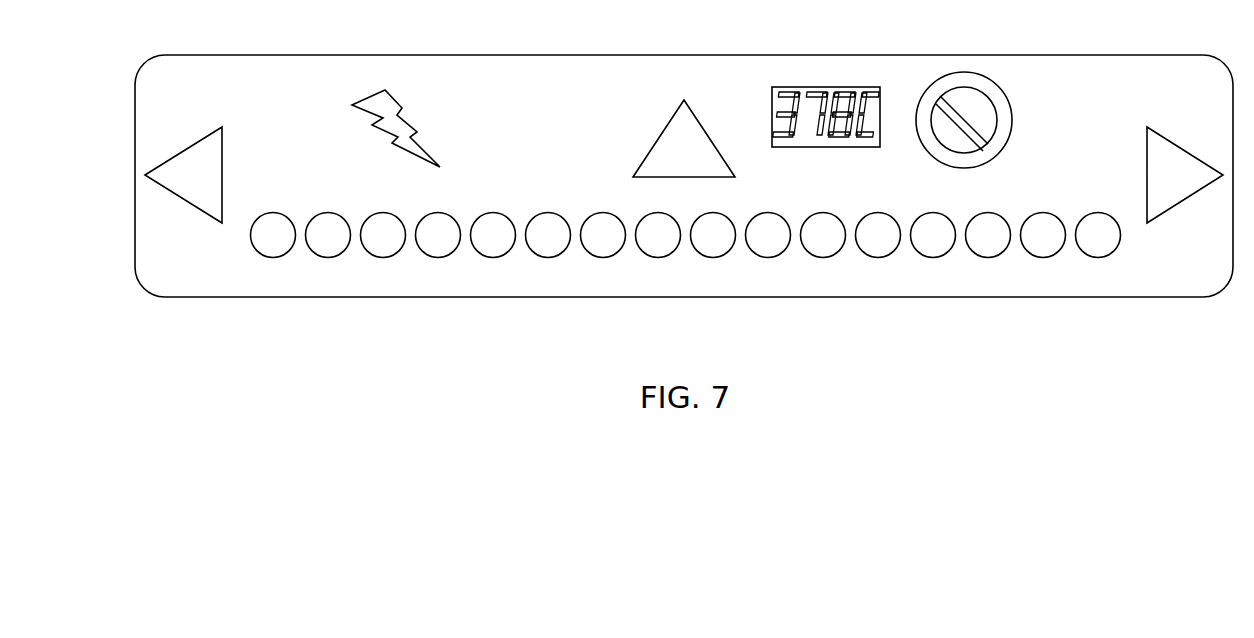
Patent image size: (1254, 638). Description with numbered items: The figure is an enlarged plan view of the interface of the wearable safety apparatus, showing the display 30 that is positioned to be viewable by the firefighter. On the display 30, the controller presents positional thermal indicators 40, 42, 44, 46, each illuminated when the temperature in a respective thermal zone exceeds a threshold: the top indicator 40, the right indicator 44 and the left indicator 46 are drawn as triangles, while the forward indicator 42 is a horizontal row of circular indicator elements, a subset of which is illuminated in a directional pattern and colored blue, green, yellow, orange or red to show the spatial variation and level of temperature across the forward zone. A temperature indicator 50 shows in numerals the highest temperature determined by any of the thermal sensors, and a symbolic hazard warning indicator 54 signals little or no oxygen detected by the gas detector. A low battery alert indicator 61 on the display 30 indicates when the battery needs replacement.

The display 30 is at (292, 62).
The positional thermal indicator 40 is at (660, 136).
The forward indicator 42 is at (253, 268).
The positional thermal indicator 44 is at (1183, 205).
The positional thermal indicator 46 is at (183, 205).
The temperature indicator 50 is at (827, 147).
The hazard warning indicator 54 is at (962, 165).
The low battery alert indicator 61 is at (385, 135).